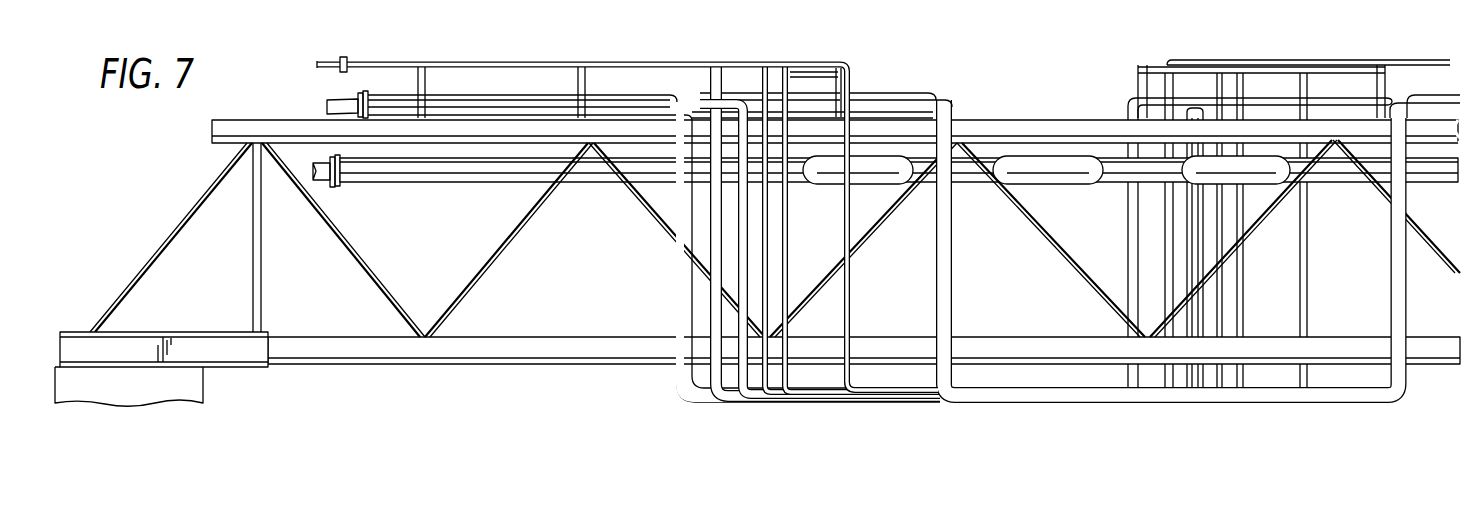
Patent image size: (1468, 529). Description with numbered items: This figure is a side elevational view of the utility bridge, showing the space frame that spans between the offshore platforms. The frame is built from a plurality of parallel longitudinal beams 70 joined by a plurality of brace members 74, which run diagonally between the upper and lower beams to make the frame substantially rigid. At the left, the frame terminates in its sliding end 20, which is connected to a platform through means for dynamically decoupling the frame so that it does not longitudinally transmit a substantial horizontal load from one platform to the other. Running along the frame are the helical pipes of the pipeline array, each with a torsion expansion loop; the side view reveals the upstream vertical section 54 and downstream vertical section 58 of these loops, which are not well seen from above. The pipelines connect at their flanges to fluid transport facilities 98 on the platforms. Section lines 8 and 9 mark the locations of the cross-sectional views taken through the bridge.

The section line 8- 8 is at (480, 30).
The section line 9- 9 is at (57, 309).
The sliding end 20 is at (243, 353).
The upstream vertical section 54 is at (1305, 258).
The downstream vertical section 58 is at (790, 255).
The longitudinal beams 70 is at (607, 356).
The brace members 74 is at (647, 210).
The fluid transport facilities 98 is at (336, 58).